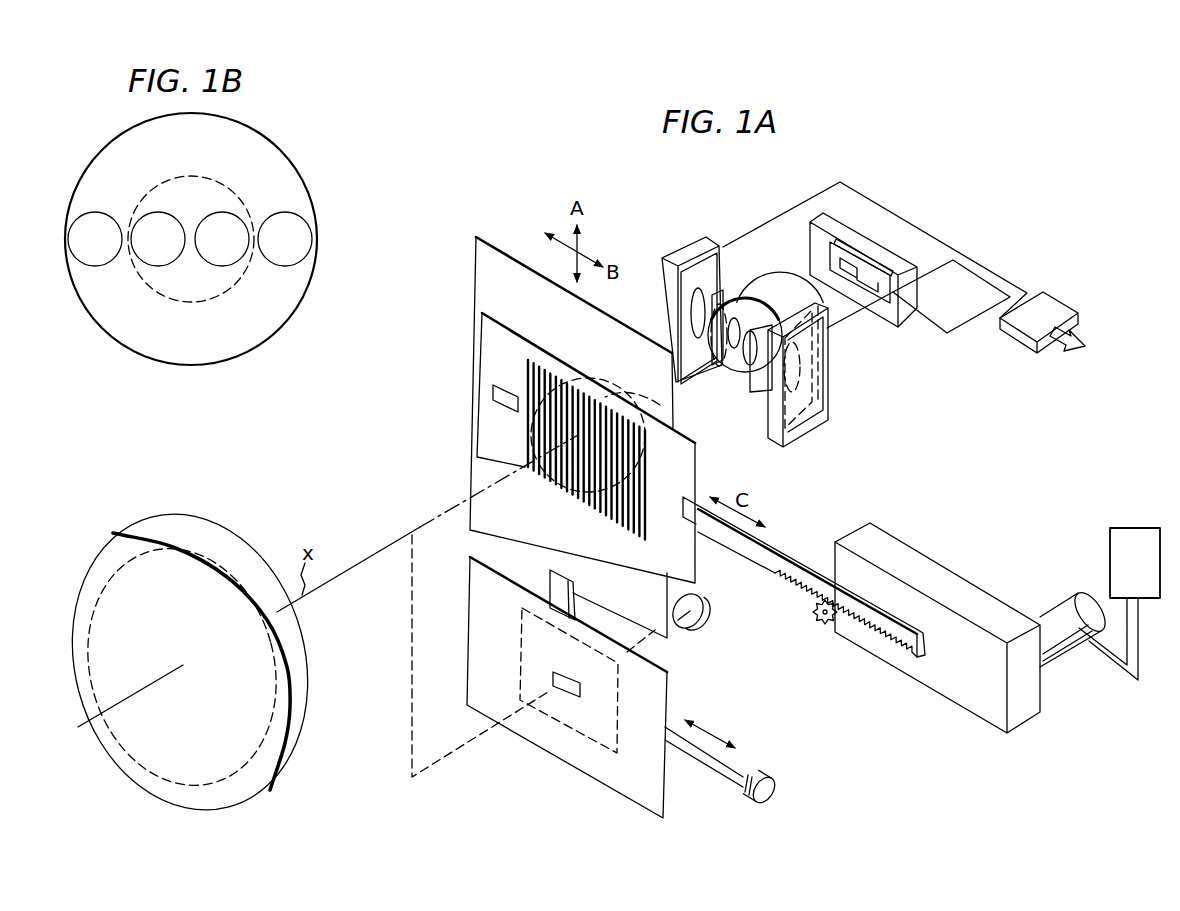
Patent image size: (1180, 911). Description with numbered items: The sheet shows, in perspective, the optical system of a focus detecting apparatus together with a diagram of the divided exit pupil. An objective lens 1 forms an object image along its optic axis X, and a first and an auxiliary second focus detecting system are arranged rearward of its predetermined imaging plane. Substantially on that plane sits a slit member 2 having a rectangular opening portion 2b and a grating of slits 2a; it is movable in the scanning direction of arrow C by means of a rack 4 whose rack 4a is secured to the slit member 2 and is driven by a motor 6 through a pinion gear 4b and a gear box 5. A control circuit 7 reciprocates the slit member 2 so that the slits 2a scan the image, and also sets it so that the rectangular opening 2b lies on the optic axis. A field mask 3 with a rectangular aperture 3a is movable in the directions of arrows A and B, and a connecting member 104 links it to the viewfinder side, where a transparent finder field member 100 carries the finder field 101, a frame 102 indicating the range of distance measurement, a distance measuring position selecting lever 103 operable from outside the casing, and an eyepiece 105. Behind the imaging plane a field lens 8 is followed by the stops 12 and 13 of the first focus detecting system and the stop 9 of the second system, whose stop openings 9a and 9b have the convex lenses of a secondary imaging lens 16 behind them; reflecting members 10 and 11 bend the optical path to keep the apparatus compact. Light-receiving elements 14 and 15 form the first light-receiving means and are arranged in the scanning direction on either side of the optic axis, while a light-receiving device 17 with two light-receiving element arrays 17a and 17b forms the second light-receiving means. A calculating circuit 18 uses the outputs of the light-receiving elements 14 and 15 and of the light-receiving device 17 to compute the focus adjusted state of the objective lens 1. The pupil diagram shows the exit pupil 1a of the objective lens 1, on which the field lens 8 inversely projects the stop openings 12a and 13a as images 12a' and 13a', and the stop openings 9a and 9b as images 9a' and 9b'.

In FIG. 1A, the objective lens 1 is at (296, 745).
In FIG. 1B, the exit pupil 1a is at (303, 184).
In FIG. 1A, the exit pupil 1a is at (185, 568).
In FIG. 1A, the slit member 2 is at (485, 318).
In FIG. 1A, the slits 2a is at (578, 495).
In FIG. 1A, the rectangular opening portion 2b is at (493, 390).
In FIG. 1A, the field mask 3 is at (485, 253).
In FIG. 1A, the rectangular aperture 3a is at (543, 482).
In FIG. 1A, the rack 4 is at (803, 555).
In FIG. 1A, the rack 4a is at (788, 587).
In FIG. 1A, the pinion gear 4b is at (815, 617).
In FIG. 1A, the gear box 5 is at (895, 547).
In FIG. 1A, the motor 6 is at (1057, 658).
In FIG. 1A, the control circuit 7 is at (1143, 586).
In FIG. 1A, the field lens 8 is at (660, 405).
In FIG. 1A, the stop 9 is at (745, 298).
In FIG. 1A, the stop opening 9a is at (726, 285).
In FIG. 1A, the stop opening 9b is at (739, 383).
In FIG. 1A, the reflecting member 10 is at (721, 368).
In FIG. 1A, the reflecting member 11 is at (760, 393).
In FIG. 1A, the stop 12 is at (692, 280).
In FIG. 1A, the stop opening 12a is at (657, 313).
In FIG. 1A, the stop 13 is at (808, 398).
In FIG. 1A, the stop opening 13a is at (835, 367).
In FIG. 1A, the light-receiving element 14 is at (708, 233).
In FIG. 1A, the light-receiving element 15 is at (807, 433).
In FIG. 1A, the secondary imaging lens 16 is at (783, 273).
In FIG. 1A, the light-receiving device 17 is at (887, 303).
In FIG. 1A, the light-receiving element array 17a is at (842, 262).
In FIG. 1A, the light-receiving element array 17b is at (877, 280).
In FIG. 1A, the calculating circuit 18 is at (1023, 322).
In FIG. 1A, the transparent finder field member 100 is at (472, 707).
In FIG. 1A, the finder field 101 is at (583, 733).
In FIG. 1A, the frame 102 is at (565, 688).
In FIG. 1A, the distance measuring position selecting lever 103 is at (707, 773).
In FIG. 1A, the connecting member 104 is at (550, 592).
In FIG. 1A, the eyepiece 105 is at (698, 633).
In FIG. 1B, the inversely projected image of stop opening 9a' is at (233, 216).
In FIG. 1B, the inversely projected image of stop opening 9b' is at (144, 215).
In FIG. 1B, the inversely projected image of stop opening 12a' is at (322, 239).
In FIG. 1B, the inversely projected image of stop opening 13a' is at (71, 262).